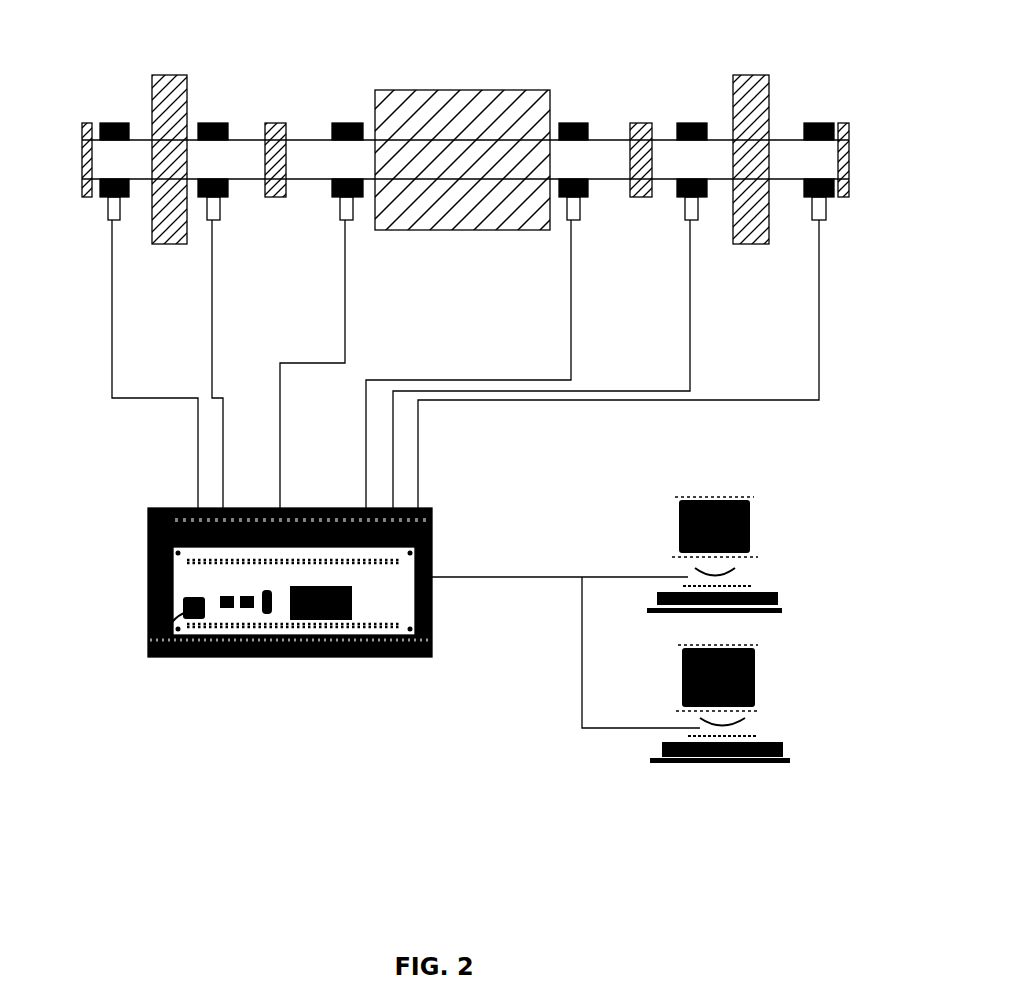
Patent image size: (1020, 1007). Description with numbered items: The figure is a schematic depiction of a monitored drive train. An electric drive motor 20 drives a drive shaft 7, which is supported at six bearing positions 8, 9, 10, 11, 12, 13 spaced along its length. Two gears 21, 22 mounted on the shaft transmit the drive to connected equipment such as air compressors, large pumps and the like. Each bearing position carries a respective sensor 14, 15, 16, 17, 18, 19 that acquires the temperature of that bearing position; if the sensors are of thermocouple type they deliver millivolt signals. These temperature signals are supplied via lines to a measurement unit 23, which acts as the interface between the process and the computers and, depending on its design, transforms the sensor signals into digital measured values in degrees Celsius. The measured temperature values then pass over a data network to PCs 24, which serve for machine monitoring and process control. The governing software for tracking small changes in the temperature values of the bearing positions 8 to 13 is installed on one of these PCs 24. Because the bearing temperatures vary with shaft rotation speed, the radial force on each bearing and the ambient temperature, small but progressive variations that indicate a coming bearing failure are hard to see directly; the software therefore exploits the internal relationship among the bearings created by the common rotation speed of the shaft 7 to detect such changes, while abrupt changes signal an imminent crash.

The drive shaft 7 is at (303, 165).
The bearing position 8 is at (110, 123).
The bearing position 9 is at (215, 123).
The bearing position 10 is at (337, 123).
The bearing position 11 is at (575, 123).
The bearing position 12 is at (687, 123).
The bearing position 13 is at (823, 123).
The sensor 14 is at (112, 210).
The sensor 15 is at (213, 210).
The sensor 16 is at (345, 210).
The sensor 17 is at (573, 207).
The sensor 18 is at (692, 208).
The sensor 19 is at (818, 208).
The drive motor 20 is at (473, 123).
The gear 21 is at (165, 102).
The gear 22 is at (757, 100).
The measurement unit 23 is at (148, 592).
The PC 24 is at (745, 653).